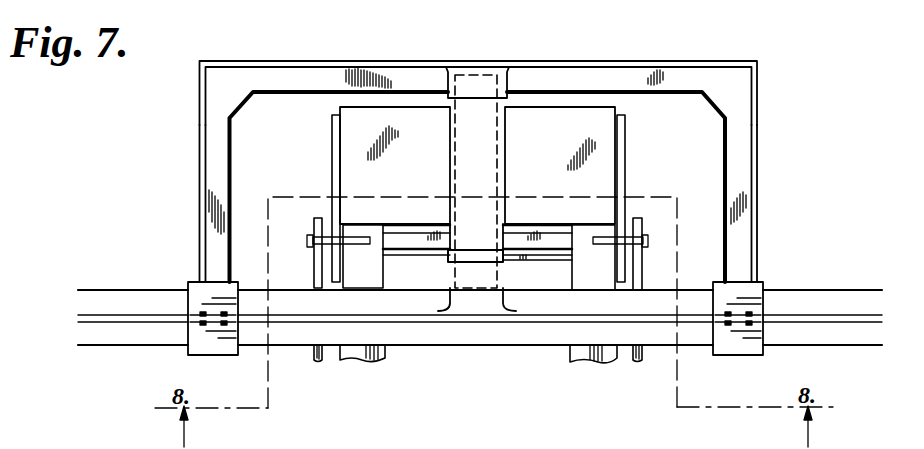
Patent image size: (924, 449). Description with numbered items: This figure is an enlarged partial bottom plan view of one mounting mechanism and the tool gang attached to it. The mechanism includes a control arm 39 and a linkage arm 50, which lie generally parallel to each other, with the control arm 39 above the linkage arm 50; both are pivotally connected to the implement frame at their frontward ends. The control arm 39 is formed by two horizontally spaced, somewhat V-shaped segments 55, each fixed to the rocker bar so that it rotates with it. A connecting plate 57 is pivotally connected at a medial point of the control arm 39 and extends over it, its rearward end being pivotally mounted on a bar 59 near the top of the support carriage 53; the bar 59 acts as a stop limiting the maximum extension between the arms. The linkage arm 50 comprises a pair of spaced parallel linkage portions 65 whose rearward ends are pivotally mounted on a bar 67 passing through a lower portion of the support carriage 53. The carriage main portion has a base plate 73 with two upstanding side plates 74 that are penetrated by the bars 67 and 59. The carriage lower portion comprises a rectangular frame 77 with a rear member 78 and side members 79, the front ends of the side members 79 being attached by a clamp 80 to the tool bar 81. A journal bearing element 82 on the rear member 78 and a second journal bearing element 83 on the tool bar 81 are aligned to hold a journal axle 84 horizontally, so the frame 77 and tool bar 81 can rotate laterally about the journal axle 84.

The control arm 39 is at (385, 352).
The linkage arm 50 is at (318, 362).
The support carriage 53 is at (500, 100).
The segments 55 is at (377, 258).
The connecting plate 57 is at (424, 252).
The bar 59 is at (543, 225).
The linkage portions 65 is at (313, 262).
The bar 67 is at (608, 240).
The base plate 73 is at (363, 135).
The side plates 74 is at (335, 163).
The rectangular frame 77 is at (424, 34).
The rear member 78 is at (323, 32).
The side members 79 is at (212, 163).
The clamp 80 is at (190, 284).
The tool bar 81 is at (846, 297).
The journal bearing element 82 is at (465, 77).
The second journal bearing element 83 is at (480, 293).
The journal axle 84 is at (488, 260).